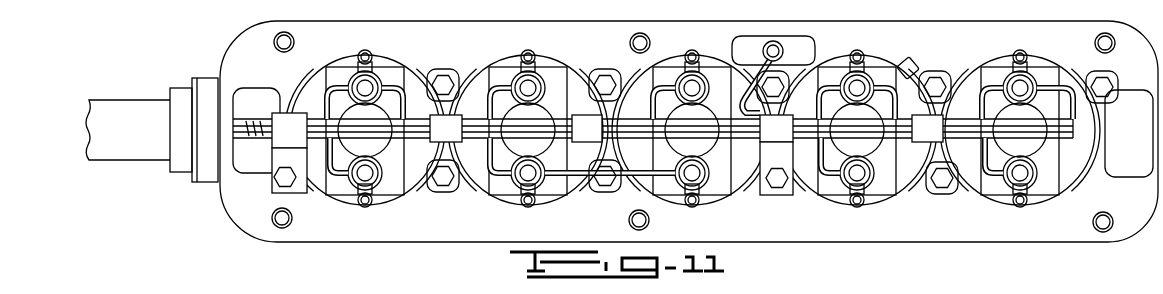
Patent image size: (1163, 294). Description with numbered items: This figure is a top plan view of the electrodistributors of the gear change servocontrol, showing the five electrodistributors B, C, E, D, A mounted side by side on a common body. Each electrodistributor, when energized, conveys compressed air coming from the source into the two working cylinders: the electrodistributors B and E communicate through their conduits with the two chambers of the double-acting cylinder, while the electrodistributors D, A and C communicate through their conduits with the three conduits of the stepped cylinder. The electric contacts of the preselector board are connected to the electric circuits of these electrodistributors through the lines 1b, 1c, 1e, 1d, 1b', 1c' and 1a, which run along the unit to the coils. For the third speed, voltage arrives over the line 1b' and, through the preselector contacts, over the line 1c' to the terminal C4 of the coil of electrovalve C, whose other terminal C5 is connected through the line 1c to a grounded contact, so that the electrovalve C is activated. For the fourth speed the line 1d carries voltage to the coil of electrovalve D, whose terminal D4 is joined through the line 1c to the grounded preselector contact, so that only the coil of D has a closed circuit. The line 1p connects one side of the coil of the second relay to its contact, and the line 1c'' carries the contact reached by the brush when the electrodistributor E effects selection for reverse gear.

The line 1c is at (711, 85).
The line 1c' is at (326, 178).
The line 1c'' is at (773, 54).
The line 1p is at (785, 56).
The line 1b is at (493, 83).
The line 1b' is at (570, 174).
The line 1e is at (672, 87).
The line 1a is at (821, 165).
The line 1d is at (990, 195).
The electrodistributor C is at (399, 207).
The electrodistributor B is at (557, 207).
The electrodistributor E is at (729, 206).
The electrodistributor A is at (887, 209).
The electrodistributor D is at (1060, 209).
The terminal of the coil of C C4 is at (367, 208).
The terminal of the coil of C C5 is at (372, 52).
The terminal of the coil of D D4 is at (1027, 52).